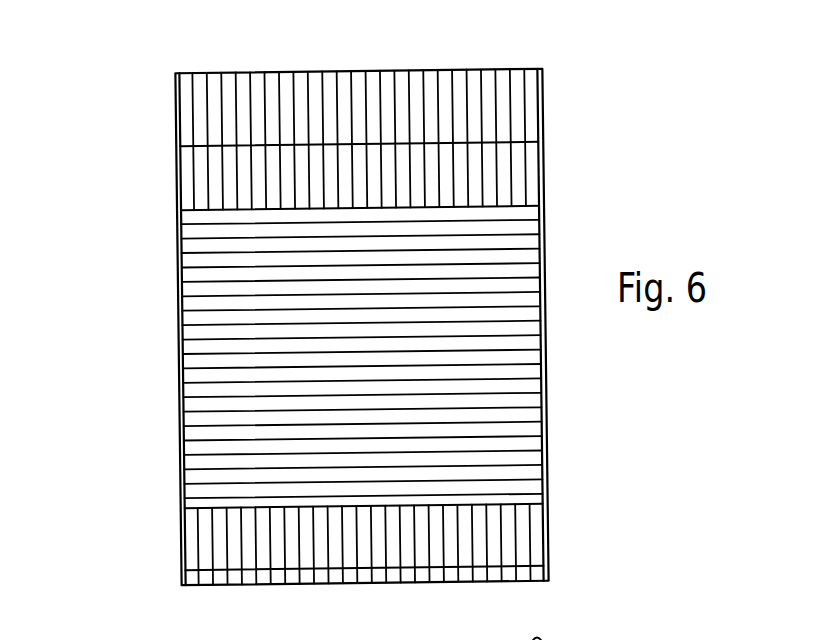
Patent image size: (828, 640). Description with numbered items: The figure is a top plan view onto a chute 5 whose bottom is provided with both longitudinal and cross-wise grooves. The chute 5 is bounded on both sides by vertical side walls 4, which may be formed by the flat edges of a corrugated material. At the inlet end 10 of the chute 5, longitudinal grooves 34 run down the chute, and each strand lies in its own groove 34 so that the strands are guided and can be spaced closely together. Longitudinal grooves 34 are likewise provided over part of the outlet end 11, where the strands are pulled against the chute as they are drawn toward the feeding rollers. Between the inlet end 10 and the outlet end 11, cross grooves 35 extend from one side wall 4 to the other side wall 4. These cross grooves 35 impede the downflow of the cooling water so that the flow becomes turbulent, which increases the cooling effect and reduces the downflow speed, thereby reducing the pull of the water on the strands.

The side wall 4 is at (178, 252).
The chute 5 is at (359, 320).
The inlet end 10 is at (505, 138).
The outlet end 11 is at (508, 567).
The longitudinal grooves 34 is at (294, 91).
The cross grooves 35 is at (210, 397).